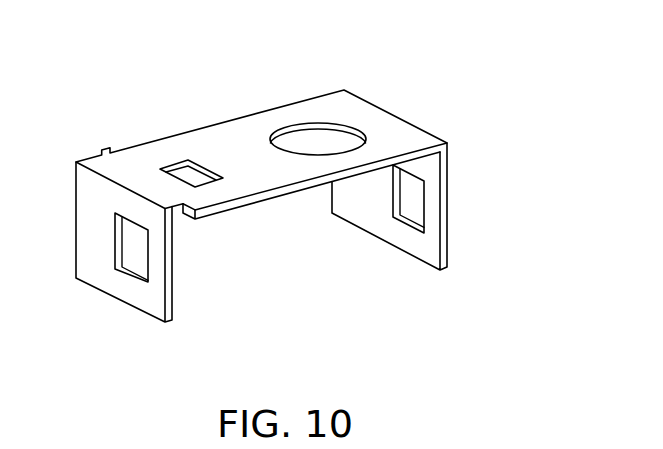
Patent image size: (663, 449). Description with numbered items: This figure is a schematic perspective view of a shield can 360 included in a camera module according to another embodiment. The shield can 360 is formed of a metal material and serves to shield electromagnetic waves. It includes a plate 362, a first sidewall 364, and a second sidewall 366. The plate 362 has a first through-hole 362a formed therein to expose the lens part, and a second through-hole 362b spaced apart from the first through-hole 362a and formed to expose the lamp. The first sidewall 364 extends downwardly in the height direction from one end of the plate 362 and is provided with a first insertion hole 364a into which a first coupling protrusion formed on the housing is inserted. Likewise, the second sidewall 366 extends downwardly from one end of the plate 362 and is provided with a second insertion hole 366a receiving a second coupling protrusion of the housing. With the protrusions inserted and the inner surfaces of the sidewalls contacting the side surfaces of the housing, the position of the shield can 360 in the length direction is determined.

The shield can 360 is at (266, 21).
The plate 362 is at (242, 124).
The first through-hole 362a is at (323, 139).
The second through-hole 362b is at (187, 176).
The first sidewall 364 is at (430, 247).
The first insertion hole 364a is at (407, 201).
The second sidewall 366 is at (102, 270).
The second insertion hole 366a is at (135, 243).